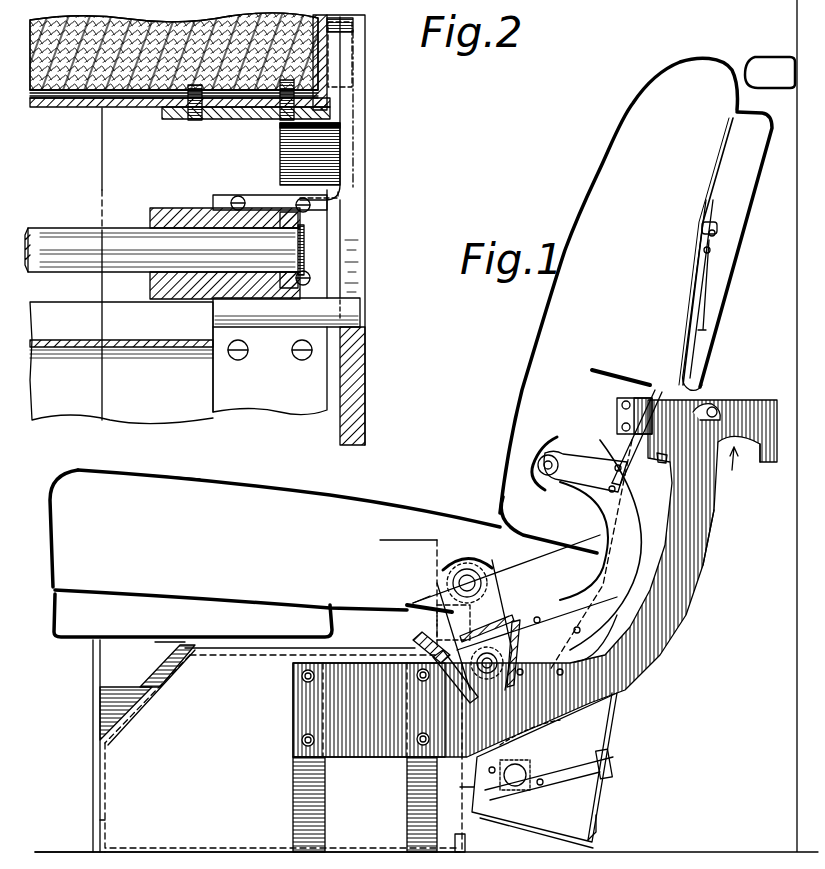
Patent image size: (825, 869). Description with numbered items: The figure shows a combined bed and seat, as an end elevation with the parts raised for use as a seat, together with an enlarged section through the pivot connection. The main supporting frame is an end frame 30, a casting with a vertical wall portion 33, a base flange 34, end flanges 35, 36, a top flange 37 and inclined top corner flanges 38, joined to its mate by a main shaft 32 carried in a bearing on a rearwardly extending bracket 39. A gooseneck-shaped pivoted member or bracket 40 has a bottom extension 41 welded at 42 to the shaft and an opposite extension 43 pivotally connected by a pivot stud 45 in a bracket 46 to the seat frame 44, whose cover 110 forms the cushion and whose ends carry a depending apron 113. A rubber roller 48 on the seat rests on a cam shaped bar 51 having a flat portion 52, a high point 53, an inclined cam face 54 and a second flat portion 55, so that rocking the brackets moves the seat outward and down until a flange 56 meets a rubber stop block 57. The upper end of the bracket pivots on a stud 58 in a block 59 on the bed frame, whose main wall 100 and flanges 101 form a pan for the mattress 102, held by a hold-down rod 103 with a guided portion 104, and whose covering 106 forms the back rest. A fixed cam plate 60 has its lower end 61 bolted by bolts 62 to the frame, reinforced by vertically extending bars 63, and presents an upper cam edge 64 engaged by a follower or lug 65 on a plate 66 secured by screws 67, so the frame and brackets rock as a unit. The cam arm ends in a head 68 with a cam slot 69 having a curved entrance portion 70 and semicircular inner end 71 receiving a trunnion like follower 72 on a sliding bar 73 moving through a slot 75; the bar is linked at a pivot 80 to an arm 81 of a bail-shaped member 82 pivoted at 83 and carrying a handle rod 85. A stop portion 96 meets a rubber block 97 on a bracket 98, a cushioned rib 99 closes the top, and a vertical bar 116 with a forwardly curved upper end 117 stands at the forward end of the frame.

In FIG. 1, the end frame 30 is at (103, 770).
In FIG. 2, the main shaft 32 is at (92, 237).
In FIG. 1, the main shaft 32 is at (506, 661).
In FIG. 1, the vertical wall portion 33 is at (120, 790).
In FIG. 1, the bottom or base flange 34 is at (216, 849).
In FIG. 1, the end flange 35 is at (103, 822).
In FIG. 1, the end flange 36 is at (467, 840).
In FIG. 1, the top flange 37 is at (277, 653).
In FIG. 1, the inclined top corner flange 38 is at (419, 656).
In FIG. 2, the bracket 39 is at (180, 294).
In FIG. 2, the pivoted member or bracket 40 is at (354, 136).
In FIG. 1, the pivoted member or bracket 40 is at (557, 582).
In FIG. 2, the bottom extension 41 is at (312, 216).
In FIG. 1, the bottom extension 41 is at (522, 636).
In FIG. 2, the weld connection 42 is at (307, 231).
In FIG. 2, the opposite extension 43 is at (345, 28).
In FIG. 1, the opposite extension 43 is at (474, 563).
In FIG. 2, the seat frame 44 is at (90, 120).
In FIG. 1, the seat frame 44 is at (87, 459).
In FIG. 2, the pivot stud 45 is at (350, 62).
In FIG. 1, the pivot stud 45 is at (484, 589).
In FIG. 2, the bracket 46 is at (338, 108).
In FIG. 1, the bracket 46 is at (447, 599).
In FIG. 1, the rubber roller 48 is at (208, 641).
In FIG. 1, the cam shaped bar 51 is at (173, 674).
In FIG. 1, the flat portion 52 is at (192, 660).
In FIG. 1, the high point 53 is at (162, 645).
In FIG. 1, the inclined cam face 54 is at (152, 662).
In FIG. 1, the second flat portion 55 is at (122, 698).
In FIG. 2, the flange 56 is at (284, 152).
In FIG. 1, the flange 56 is at (437, 625).
In FIG. 1, the cushioning rubber stop block 57 is at (423, 643).
In FIG. 1, the stud 58 is at (543, 473).
In FIG. 1, the block 59 is at (594, 465).
In FIG. 2, the fixed cam plate 60 is at (367, 369).
In FIG. 1, the fixed cam plate 60 is at (705, 577).
In FIG. 1, the lower end 61 is at (382, 752).
In FIG. 1, the bolt 62 is at (304, 739).
In FIG. 1, the vertically extending bar 63 is at (294, 788).
In FIG. 2, the upper cam edge 64 is at (363, 270).
In FIG. 1, the upper cam edge 64 is at (611, 607).
In FIG. 2, the follower or lug 65 is at (352, 300).
In FIG. 1, the follower or lug 65 is at (523, 667).
In FIG. 2, the plate 66 is at (224, 370).
In FIG. 1, the plate 66 is at (533, 756).
In FIG. 2, the screw 67 is at (293, 348).
In FIG. 1, the enlargement or head 68 is at (757, 400).
In FIG. 1, the cam slot 69 is at (737, 469).
In FIG. 1, the curved entrance portion 70 is at (742, 456).
In FIG. 1, the semicircular inner end 71 is at (645, 447).
In FIG. 1, the trunnion like follower 72 is at (559, 777).
In FIG. 1, the bar 73 is at (538, 764).
In FIG. 1, the slot 75 is at (562, 754).
In FIG. 1, the pivotal connection 80 is at (711, 251).
In FIG. 1, the arm 81 is at (703, 291).
In FIG. 1, the bail-shaped member 82 is at (700, 329).
In FIG. 1, the pivot 83 is at (718, 234).
In FIG. 1, the handle rod or bar 85 is at (724, 418).
In FIG. 1, the stop portion 96 is at (659, 461).
In FIG. 1, the block 97 is at (645, 383).
In FIG. 1, the bracket 98 is at (619, 407).
In FIG. 1, the cushioned rib 99 is at (771, 56).
In FIG. 2, the main wall 100 is at (114, 367).
In FIG. 1, the main wall 100 is at (484, 810).
In FIG. 1, the flanges 101 is at (622, 706).
In FIG. 1, the mattress 102 is at (746, 198).
In FIG. 1, the hold-down rod 103 is at (613, 766).
In FIG. 1, the guided portion 104 is at (599, 823).
In FIG. 1, the covering 106 is at (598, 192).
In FIG. 1, the cover 110 is at (276, 490).
In FIG. 1, the depending apron 113 is at (55, 634).
In FIG. 1, the vertical bar 116 is at (92, 733).
In FIG. 1, the forwardly curved upper end 117 is at (94, 646).